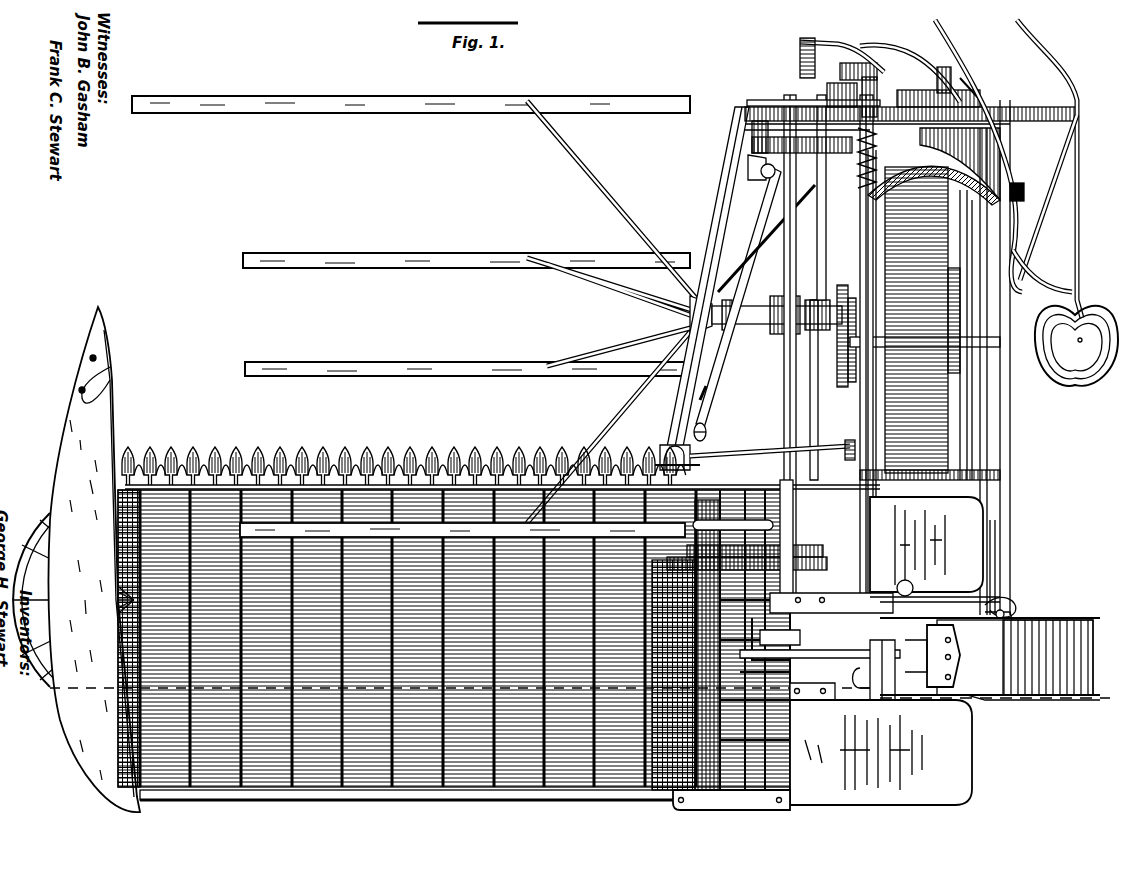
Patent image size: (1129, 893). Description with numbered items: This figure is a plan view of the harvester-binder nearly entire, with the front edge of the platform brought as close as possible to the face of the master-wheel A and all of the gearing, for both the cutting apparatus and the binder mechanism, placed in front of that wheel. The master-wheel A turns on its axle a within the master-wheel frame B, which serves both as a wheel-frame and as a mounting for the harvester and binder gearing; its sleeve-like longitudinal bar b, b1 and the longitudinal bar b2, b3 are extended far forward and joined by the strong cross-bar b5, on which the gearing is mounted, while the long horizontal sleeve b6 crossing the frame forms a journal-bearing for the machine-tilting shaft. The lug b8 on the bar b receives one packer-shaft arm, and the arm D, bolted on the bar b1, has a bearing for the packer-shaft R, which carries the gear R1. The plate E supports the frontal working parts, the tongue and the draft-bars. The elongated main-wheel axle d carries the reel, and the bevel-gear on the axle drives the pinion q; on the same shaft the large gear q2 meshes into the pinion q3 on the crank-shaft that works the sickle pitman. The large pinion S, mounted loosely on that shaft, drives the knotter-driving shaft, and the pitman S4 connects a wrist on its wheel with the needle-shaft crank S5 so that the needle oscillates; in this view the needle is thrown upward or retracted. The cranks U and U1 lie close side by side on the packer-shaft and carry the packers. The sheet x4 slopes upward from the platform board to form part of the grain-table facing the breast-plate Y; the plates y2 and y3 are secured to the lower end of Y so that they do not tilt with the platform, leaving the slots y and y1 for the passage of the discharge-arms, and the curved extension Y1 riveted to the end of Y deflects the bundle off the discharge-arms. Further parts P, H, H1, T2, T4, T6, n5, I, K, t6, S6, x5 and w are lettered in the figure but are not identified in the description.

The axle a is at (848, 296).
The driving gear P is at (835, 372).
The main-wheel axle d is at (722, 212).
The pinion q is at (772, 178).
The packer-shaft R is at (789, 104).
The upright standard T2 is at (860, 168).
The frame upright T4 is at (868, 216).
The large gear q2 is at (712, 400).
The pinion q3 is at (708, 430).
The horizontal connecting rod H is at (835, 465).
The frame plate E is at (968, 110).
The gear R1 is at (750, 146).
The outreaching arm D is at (745, 162).
The needle-shaft crank S5 is at (838, 78).
The hand lever H1 is at (800, 50).
The pitman S4 is at (900, 50).
The large pinion S is at (930, 71).
The bracket T6 is at (958, 82).
The cross-bar b5 is at (934, 369).
The master-wheel A is at (916, 320).
The longitudinal bar b1 is at (878, 266).
The rack n5 is at (950, 276).
The longitudinal bar b is at (902, 526).
The horizontal sleeve b6 is at (930, 483).
The master-wheel frame B is at (1005, 178).
The longitudinal bar b3 is at (1012, 270).
The driver's seat I is at (1076, 346).
The grain divider with wheel K is at (56, 582).
The toothed rack t6 is at (753, 556).
The crank U is at (762, 632).
The pump S6 is at (883, 670).
The crank U1 is at (752, 672).
The slot y is at (800, 690).
The plate y2 is at (881, 752).
The box marks x5 is at (821, 750).
The grain-table sheet x4 is at (926, 544).
The longitudinal bar b2 is at (986, 536).
The lug b8 is at (903, 587).
The plate y3 is at (938, 597).
The loop w is at (1003, 598).
The slot y1 is at (1010, 604).
The curved extension Y1 is at (990, 656).
The breast-plate Y is at (932, 656).